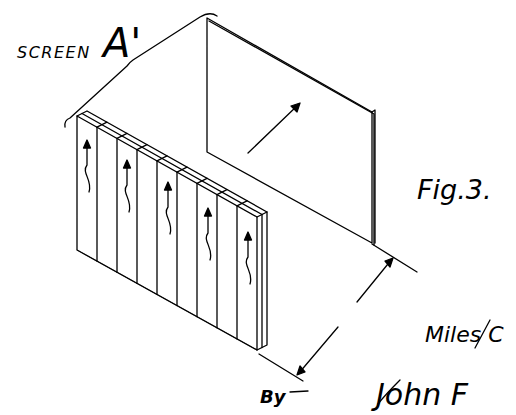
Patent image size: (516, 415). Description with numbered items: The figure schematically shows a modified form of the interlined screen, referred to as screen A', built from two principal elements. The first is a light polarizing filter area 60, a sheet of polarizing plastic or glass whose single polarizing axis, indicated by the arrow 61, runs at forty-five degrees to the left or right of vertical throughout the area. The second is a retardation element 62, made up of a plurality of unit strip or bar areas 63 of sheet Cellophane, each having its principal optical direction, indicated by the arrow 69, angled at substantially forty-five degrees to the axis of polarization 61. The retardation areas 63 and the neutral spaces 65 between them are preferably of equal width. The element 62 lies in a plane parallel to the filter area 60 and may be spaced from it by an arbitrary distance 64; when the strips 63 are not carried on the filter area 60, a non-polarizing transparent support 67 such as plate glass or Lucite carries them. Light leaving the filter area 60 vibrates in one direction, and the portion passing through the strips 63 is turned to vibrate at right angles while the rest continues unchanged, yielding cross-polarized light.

The light polarizing filter area 60 is at (377, 126).
The polarizing axis arrow 61 is at (279, 122).
The retardation element 62 is at (187, 251).
The unit strip areas 63 is at (89, 250).
The arbitrary distance 64 is at (338, 312).
The neutral elements or spaces 65 is at (110, 262).
The transparent support 67 is at (264, 257).
The principal optical direction arrow 69 is at (279, 322).